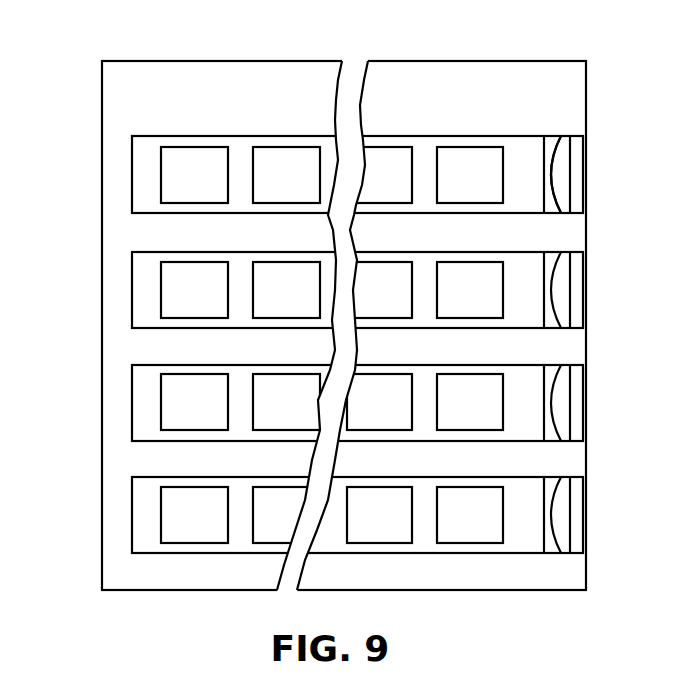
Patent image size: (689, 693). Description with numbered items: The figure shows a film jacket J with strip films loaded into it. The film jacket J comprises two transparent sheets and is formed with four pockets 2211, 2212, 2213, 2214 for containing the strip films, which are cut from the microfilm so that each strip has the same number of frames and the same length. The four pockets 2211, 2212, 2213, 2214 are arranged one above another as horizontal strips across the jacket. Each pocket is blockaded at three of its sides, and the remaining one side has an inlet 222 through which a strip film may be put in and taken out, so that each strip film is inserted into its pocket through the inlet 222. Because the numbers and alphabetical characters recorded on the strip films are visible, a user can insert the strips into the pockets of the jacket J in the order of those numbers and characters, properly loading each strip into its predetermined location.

The pocket 2211 is at (137, 172).
The pocket 2212 is at (137, 283).
The pocket 2213 is at (137, 403).
The pocket 2214 is at (139, 513).
The inlet 222 is at (563, 170).
The film jacket J is at (463, 63).